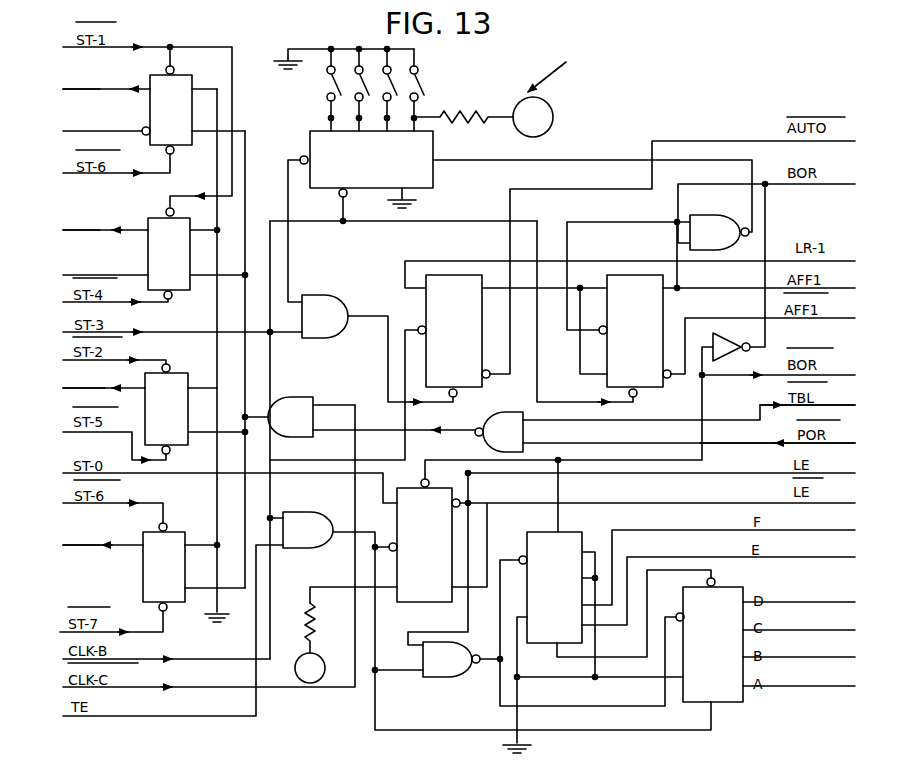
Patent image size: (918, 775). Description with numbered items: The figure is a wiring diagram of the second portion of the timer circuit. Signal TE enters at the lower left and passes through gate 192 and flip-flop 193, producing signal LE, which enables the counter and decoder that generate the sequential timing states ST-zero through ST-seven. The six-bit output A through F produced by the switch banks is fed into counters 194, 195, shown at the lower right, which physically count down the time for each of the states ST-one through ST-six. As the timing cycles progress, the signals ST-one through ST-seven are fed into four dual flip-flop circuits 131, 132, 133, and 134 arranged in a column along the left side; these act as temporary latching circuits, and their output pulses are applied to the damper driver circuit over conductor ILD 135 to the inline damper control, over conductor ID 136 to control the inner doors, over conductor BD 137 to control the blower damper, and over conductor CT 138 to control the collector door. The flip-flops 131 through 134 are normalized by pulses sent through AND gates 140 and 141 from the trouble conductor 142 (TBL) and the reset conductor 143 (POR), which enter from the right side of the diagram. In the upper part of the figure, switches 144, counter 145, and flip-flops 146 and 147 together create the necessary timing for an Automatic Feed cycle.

The dual flip-flop circuit 131 is at (202, 24).
The dual flip-flop circuit 132 is at (158, 217).
The dual flip-flop circuit 133 is at (193, 344).
The dual flip-flop circuit 134 is at (146, 572).
The conductor ILD 135 is at (80, 88).
The conductor ID 136 is at (70, 232).
The conductor BD 137 is at (71, 390).
The conductor CT 138 is at (66, 546).
The AND gate 140 is at (283, 405).
The AND gate 141 is at (514, 388).
The trouble conductor 142 is at (710, 421).
The reset conductor 143 is at (713, 445).
The switches 144 is at (418, 84).
The counter 145 is at (427, 176).
The flip-flop 146 is at (637, 275).
The flip-flop 147 is at (457, 282).
The gate 192 is at (497, 621).
The flip-flop 193 is at (407, 605).
The counter 194 is at (730, 702).
The counter 195 is at (575, 538).